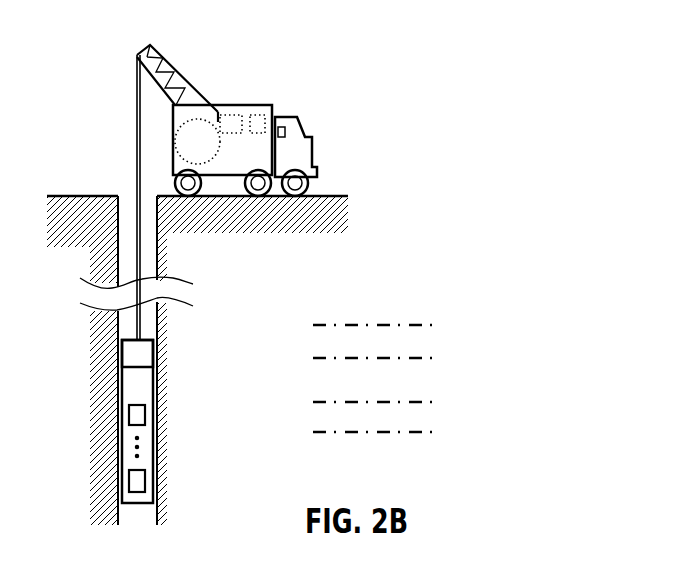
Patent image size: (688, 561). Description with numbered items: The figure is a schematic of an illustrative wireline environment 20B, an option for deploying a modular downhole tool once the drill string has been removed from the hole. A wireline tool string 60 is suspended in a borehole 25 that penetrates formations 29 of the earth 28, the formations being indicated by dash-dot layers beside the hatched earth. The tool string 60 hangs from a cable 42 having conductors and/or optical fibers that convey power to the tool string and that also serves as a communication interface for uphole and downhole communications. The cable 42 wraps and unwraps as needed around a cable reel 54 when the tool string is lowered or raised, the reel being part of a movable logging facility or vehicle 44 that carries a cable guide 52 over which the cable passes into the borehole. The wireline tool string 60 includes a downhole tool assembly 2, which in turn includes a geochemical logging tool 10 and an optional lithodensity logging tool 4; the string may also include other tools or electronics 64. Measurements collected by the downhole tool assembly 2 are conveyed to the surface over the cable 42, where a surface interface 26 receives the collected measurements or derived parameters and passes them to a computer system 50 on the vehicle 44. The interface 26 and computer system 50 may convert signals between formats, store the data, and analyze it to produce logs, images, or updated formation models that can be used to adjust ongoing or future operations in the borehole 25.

The wireline environment 20B is at (394, 57).
The cable guide 52 is at (165, 53).
The cable 42 is at (137, 153).
The cable reel 54 is at (185, 155).
The surface interface 26 is at (228, 117).
The computer system 50 is at (257, 118).
The movable logging facility or vehicle 44 is at (312, 150).
The borehole 25 is at (128, 206).
The earth 28 is at (102, 231).
The wireline tool string 60 is at (222, 343).
The downhole tool assembly 2 is at (153, 437).
The other tools or electronics 64 is at (154, 358).
The lithodensity logging tool 4 is at (145, 418).
The geochemical logging tool 10 is at (145, 483).
The formations 29 is at (447, 313).